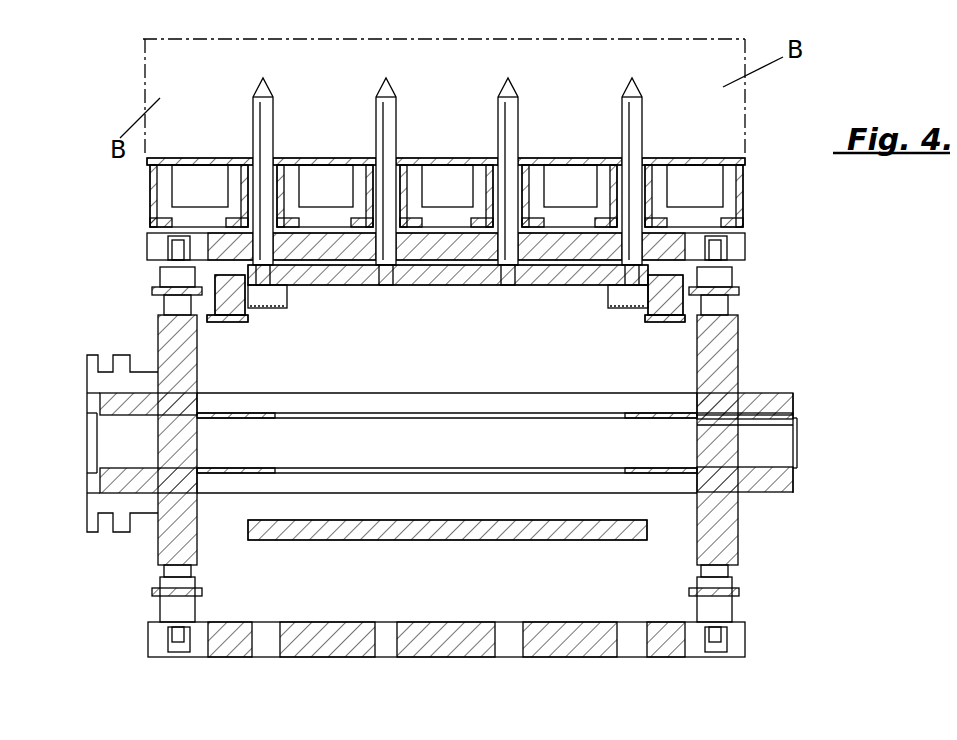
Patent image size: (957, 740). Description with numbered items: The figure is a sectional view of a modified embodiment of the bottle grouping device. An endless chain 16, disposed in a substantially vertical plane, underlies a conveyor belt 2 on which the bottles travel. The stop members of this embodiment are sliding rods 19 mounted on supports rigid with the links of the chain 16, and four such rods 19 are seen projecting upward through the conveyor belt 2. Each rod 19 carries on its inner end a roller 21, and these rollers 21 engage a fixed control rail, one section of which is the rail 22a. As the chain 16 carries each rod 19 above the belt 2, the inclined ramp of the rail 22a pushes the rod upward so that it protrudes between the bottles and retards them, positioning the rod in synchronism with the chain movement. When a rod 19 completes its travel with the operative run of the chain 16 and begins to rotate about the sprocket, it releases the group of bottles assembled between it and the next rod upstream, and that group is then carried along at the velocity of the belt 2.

The conveyor belt 2 is at (317, 160).
The sliding rod 19 is at (267, 130).
The endless chain 16 is at (565, 278).
The roller 21 is at (228, 276).
The rail section 22a is at (243, 322).